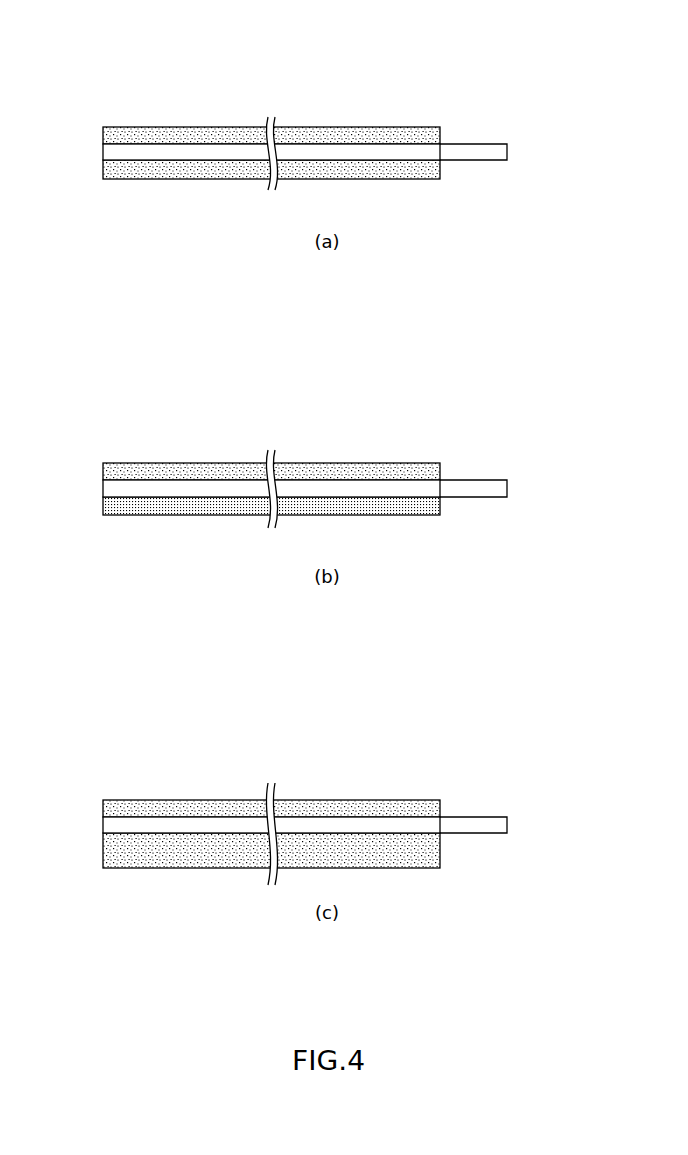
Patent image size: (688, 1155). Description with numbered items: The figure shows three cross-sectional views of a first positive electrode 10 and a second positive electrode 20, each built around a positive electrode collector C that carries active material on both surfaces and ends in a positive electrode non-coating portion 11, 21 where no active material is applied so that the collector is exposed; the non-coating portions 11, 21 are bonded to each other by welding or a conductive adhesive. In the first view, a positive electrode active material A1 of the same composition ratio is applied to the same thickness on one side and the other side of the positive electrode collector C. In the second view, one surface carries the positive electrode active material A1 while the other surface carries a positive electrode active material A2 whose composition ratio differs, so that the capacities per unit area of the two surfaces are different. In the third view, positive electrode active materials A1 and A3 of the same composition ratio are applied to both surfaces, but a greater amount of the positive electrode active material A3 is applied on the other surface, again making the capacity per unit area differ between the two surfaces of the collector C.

The first positive electrode 10 is at (321, 112).
The second positive electrode 20 is at (378, 103).
The positive electrode non-coating portion 11 is at (518, 152).
The positive electrode non-coating portion 21 is at (507, 152).
The positive electrode active material A1 is at (103, 134).
The positive electrode active material A2 is at (103, 507).
The positive electrode active material A3 is at (103, 850).
The positive electrode collector C is at (103, 152).